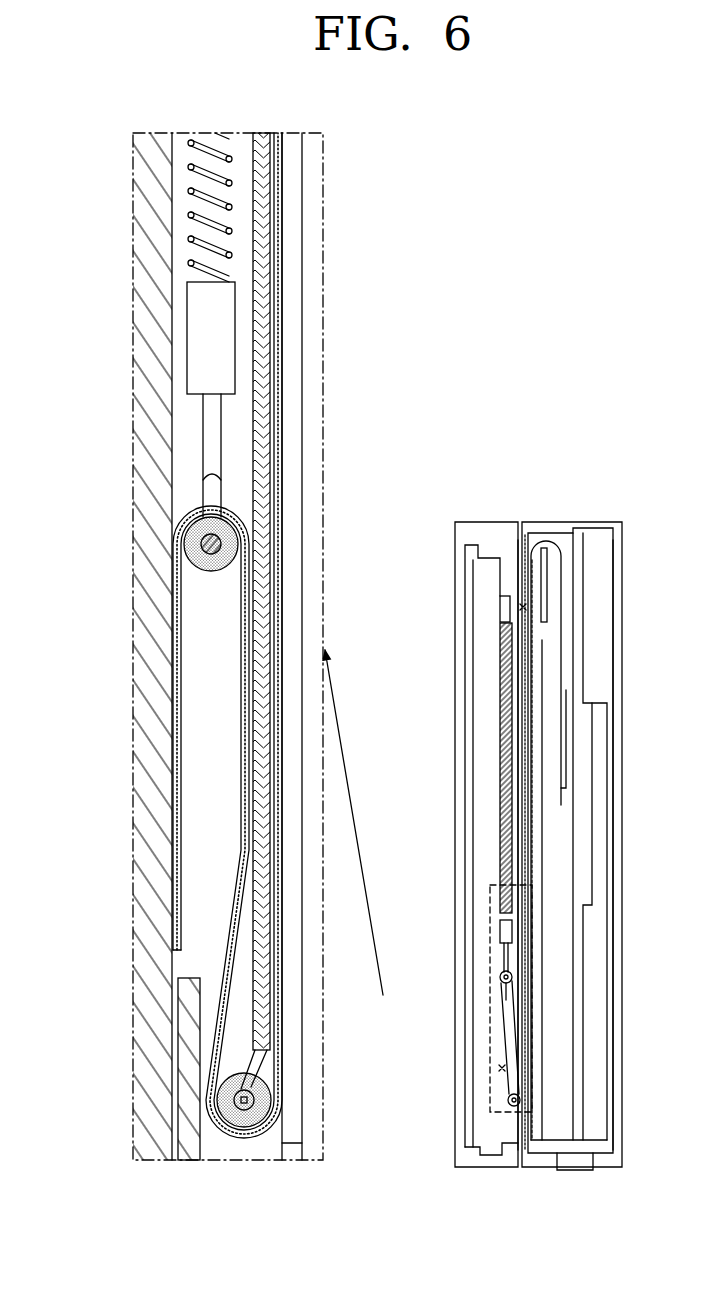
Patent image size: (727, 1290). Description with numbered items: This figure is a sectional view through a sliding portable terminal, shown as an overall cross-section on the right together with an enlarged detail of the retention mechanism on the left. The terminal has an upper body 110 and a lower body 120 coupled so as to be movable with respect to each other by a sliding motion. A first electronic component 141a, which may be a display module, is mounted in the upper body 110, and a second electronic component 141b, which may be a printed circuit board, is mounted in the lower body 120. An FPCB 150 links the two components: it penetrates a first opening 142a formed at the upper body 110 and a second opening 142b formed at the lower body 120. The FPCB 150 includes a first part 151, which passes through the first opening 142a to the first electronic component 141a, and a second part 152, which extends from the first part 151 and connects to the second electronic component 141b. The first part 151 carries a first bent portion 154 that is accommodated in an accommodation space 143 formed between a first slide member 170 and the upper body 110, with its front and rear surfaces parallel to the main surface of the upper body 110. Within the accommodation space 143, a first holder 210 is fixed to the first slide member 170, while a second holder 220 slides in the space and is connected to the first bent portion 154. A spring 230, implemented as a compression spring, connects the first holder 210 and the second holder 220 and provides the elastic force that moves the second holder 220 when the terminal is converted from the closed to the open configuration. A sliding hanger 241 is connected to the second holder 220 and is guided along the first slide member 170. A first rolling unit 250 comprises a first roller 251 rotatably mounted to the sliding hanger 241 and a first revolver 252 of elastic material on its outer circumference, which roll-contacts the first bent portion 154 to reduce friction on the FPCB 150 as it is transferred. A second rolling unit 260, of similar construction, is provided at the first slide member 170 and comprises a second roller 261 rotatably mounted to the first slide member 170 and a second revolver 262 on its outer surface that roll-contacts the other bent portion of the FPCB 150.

The upper body 110 is at (466, 518).
The lower body 120 is at (604, 518).
The first electronic component 141a is at (174, 661).
The second electronic component 141b is at (580, 662).
The first opening 142a is at (499, 1068).
The second opening 142b is at (527, 607).
The accommodation space 143 is at (508, 757).
The FPCB 150 is at (562, 578).
The first part 151 is at (243, 762).
The second part 152 is at (522, 848).
The first bent portion 154 is at (500, 962).
The first slide member 170 is at (270, 340).
The first holder 210 is at (500, 608).
The second holder 220 is at (194, 340).
The spring 230 is at (190, 213).
The sliding hanger 241 is at (208, 442).
The first rolling unit 250 is at (262, 747).
The first roller 251 is at (205, 543).
The first revolver 252 is at (190, 553).
The second rolling unit 260 is at (266, 1092).
The second roller 261 is at (238, 1098).
The second revolver 262 is at (230, 1122).